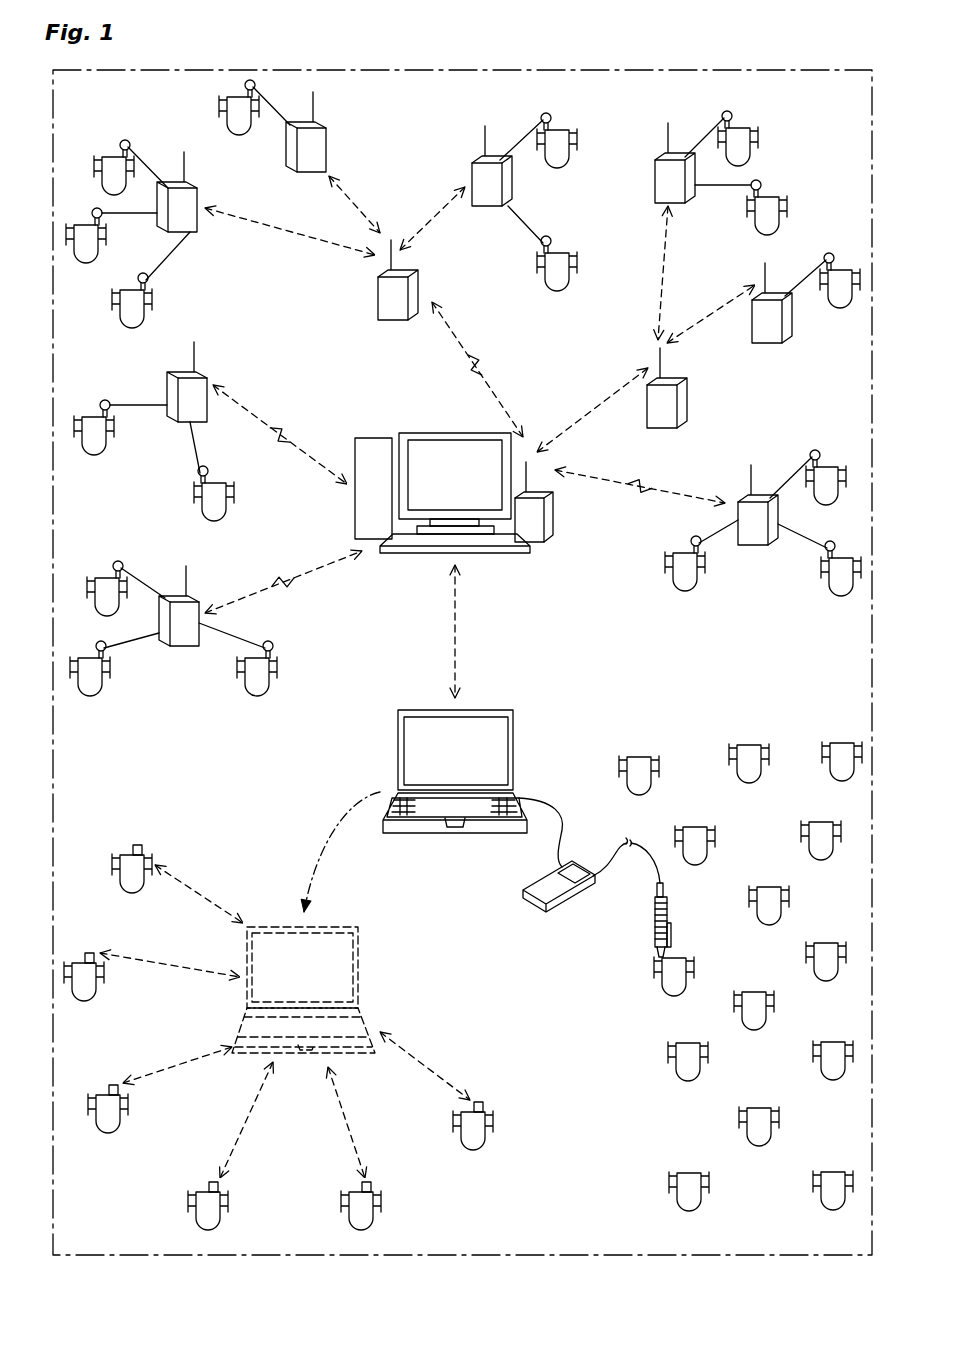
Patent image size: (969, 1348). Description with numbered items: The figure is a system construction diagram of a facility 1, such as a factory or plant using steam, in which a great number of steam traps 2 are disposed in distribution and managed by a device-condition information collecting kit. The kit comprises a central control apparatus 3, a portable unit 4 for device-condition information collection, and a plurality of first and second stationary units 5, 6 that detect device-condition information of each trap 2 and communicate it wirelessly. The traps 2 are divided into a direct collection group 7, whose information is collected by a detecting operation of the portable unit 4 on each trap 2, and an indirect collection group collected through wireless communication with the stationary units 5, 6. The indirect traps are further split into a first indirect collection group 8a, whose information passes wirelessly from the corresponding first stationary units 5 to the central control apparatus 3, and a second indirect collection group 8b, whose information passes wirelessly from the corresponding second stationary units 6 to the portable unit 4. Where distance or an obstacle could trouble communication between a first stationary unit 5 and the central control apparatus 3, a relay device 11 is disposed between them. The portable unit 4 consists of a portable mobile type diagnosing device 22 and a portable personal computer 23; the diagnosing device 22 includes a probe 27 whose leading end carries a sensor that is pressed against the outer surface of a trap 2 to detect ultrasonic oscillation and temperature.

The facility 1 is at (771, 62).
The steam trap 2 is at (462, 660).
The first indirect collection group 8a is at (110, 157).
The second indirect collection group 8b is at (133, 893).
The direct collection group 7 is at (640, 755).
The central control apparatus 3 is at (482, 565).
The portable unit 4 is at (529, 746).
The first stationary unit 5 is at (468, 367).
The relay device 11 is at (393, 310).
The second stationary unit 6 is at (140, 847).
The diagnosing device 22 is at (547, 890).
The portable personal computer 23 is at (410, 755).
The probe 27 is at (651, 918).